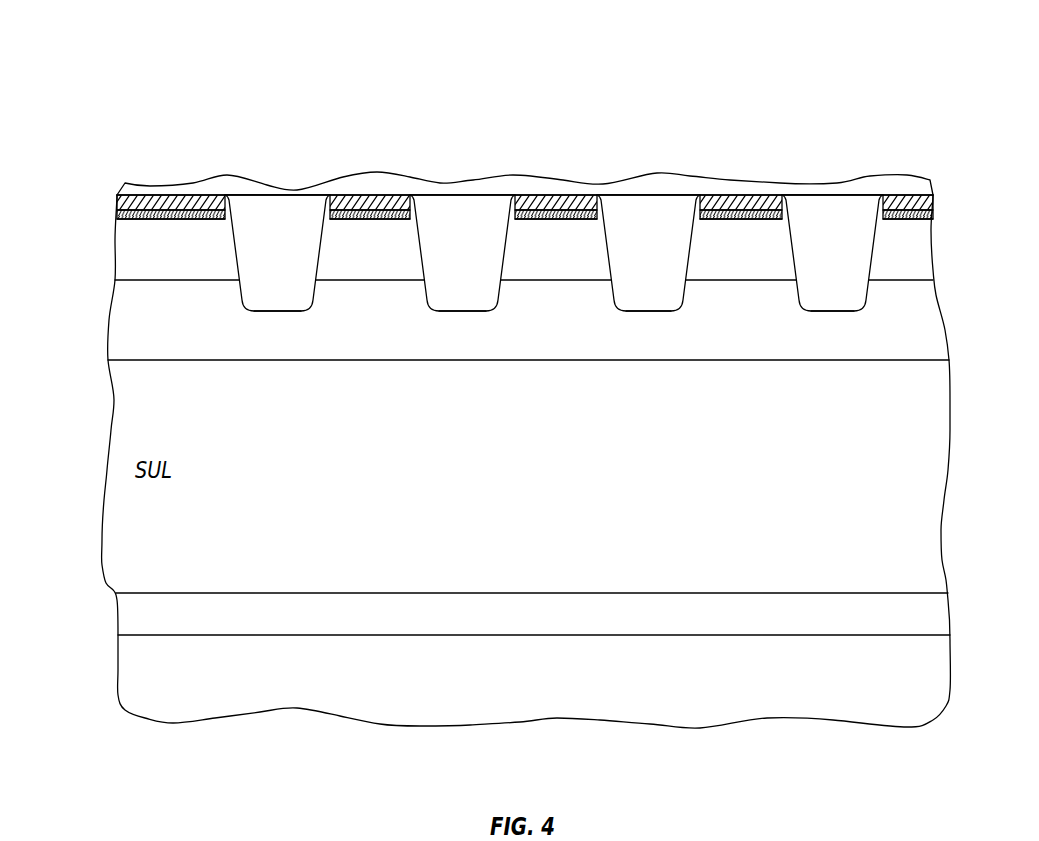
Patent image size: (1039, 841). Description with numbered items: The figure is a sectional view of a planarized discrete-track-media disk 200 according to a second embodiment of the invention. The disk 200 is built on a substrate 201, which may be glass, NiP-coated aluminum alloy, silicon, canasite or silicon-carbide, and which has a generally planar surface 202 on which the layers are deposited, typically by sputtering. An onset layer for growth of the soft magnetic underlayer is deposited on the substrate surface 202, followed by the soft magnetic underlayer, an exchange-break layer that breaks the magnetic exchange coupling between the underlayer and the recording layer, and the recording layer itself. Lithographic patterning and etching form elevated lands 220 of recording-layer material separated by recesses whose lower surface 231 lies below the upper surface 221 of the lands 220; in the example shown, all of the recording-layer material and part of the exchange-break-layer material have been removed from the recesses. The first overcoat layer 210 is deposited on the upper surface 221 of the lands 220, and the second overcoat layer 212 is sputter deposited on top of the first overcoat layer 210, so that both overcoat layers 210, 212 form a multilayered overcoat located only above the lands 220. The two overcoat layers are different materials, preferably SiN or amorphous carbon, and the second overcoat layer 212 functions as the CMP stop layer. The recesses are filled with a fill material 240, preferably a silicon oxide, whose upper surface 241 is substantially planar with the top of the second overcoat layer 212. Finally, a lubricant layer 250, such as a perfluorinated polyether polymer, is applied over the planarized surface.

The disk 200 is at (172, 64).
The substrate 201 is at (938, 677).
The substrate surface 202 is at (937, 633).
The first overcoat layer 210 is at (195, 212).
The second overcoat layer 212 is at (160, 203).
The lands 220 is at (195, 282).
The upper surface of the lands 221 is at (165, 215).
The lower surface of the recesses 231 is at (267, 308).
The fill material 240 is at (262, 218).
The upper surface of the fill material 241 is at (289, 197).
The lubricant layer 250 is at (186, 186).